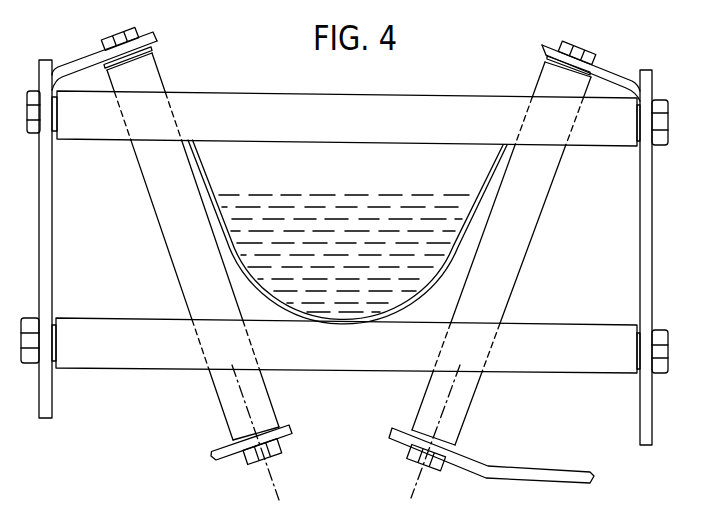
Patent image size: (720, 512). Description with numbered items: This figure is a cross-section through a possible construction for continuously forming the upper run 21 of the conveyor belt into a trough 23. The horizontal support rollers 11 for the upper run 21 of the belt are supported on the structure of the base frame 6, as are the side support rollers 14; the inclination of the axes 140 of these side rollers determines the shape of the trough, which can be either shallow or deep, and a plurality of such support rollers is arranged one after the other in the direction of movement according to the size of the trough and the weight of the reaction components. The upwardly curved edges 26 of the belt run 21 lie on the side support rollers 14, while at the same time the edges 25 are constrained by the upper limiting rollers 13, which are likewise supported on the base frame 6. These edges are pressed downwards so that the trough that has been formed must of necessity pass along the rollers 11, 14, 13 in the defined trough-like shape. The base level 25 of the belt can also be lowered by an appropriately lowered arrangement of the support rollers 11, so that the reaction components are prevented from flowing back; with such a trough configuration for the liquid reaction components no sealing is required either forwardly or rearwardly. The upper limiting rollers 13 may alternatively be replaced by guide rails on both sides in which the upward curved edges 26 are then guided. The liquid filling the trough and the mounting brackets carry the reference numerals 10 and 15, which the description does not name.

The base frame 6 is at (647, 243).
The liquid bath 10 is at (282, 207).
The horizontal support rollers 11 is at (615, 325).
The upper limiting rollers 13 is at (197, 91).
The side support rollers 14 is at (545, 183).
The mounting bracket 15 is at (610, 72).
The upper run 21 is at (294, 322).
The trough 23 is at (458, 235).
The edges / base level 25 is at (347, 323).
The upwardly curved edges 26 is at (503, 156).
The axes 140 is at (417, 492).